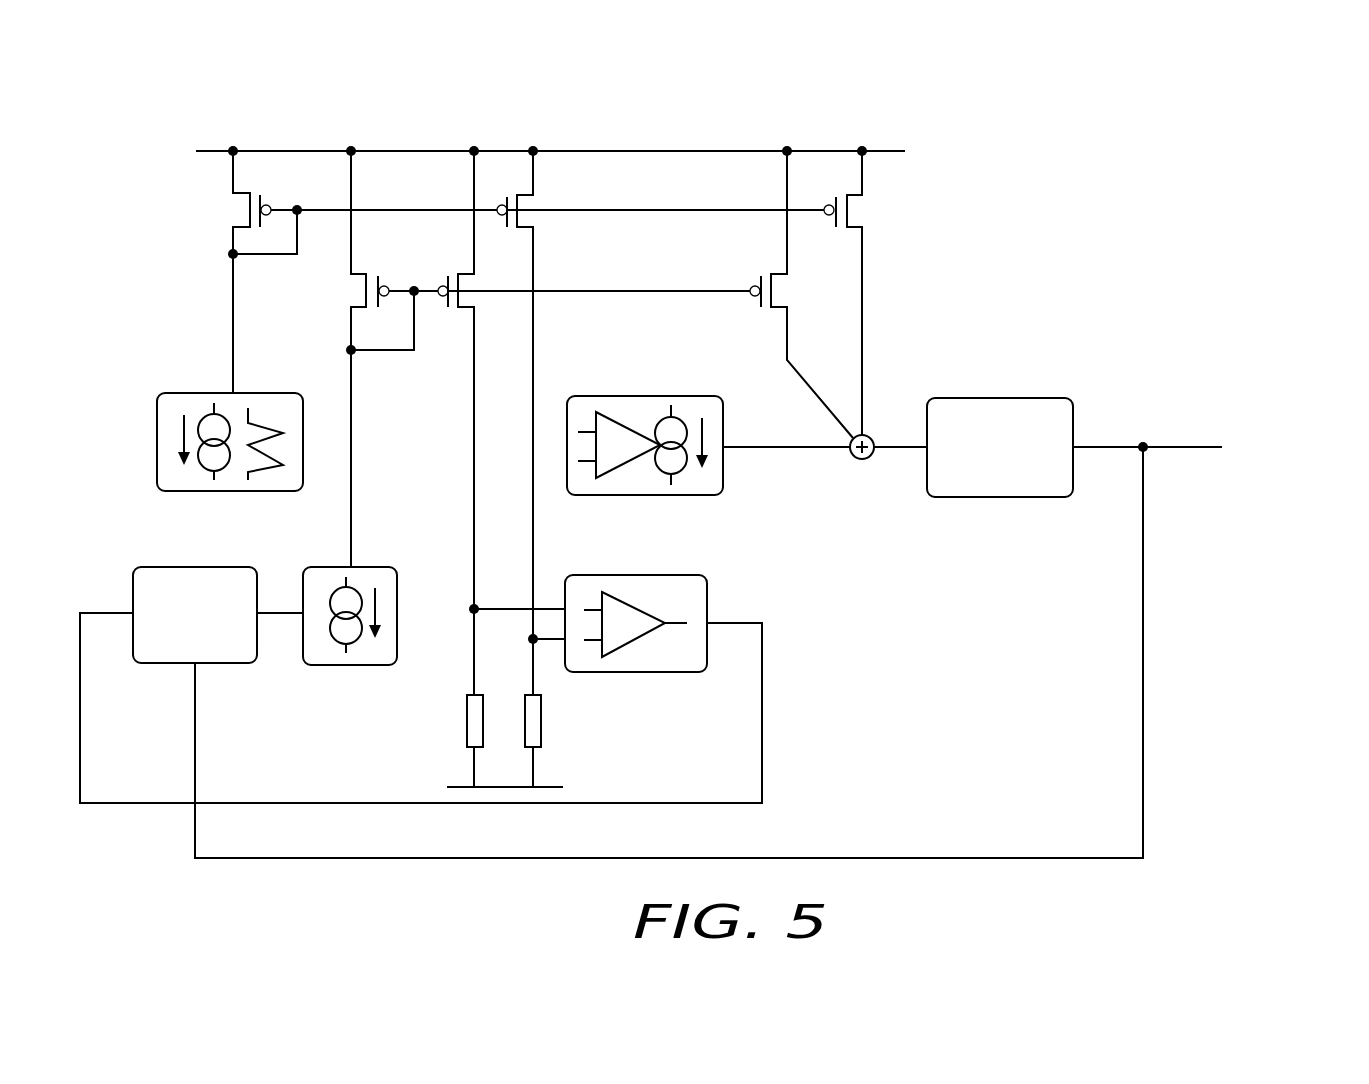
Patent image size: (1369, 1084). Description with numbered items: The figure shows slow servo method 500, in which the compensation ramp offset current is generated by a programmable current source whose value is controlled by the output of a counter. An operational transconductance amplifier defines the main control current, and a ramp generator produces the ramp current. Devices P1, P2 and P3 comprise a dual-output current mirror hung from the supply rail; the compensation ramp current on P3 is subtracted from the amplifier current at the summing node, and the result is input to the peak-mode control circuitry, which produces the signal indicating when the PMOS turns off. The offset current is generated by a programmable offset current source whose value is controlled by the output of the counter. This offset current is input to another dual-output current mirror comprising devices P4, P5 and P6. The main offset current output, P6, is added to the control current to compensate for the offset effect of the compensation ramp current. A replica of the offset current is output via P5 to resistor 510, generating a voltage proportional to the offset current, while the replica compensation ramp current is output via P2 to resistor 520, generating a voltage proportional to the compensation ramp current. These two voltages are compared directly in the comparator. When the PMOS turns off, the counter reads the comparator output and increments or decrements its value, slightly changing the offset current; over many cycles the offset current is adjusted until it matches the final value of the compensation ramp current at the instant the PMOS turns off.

The slow servo method 500 is at (346, 93).
The resistor 510 is at (467, 742).
The resistor 520 is at (541, 742).
The device P1 is at (256, 272).
The device P2 is at (429, 423).
The device P3 is at (693, 293).
The device P4 is at (376, 359).
The device P5 is at (458, 423).
The device P6 is at (650, 294).